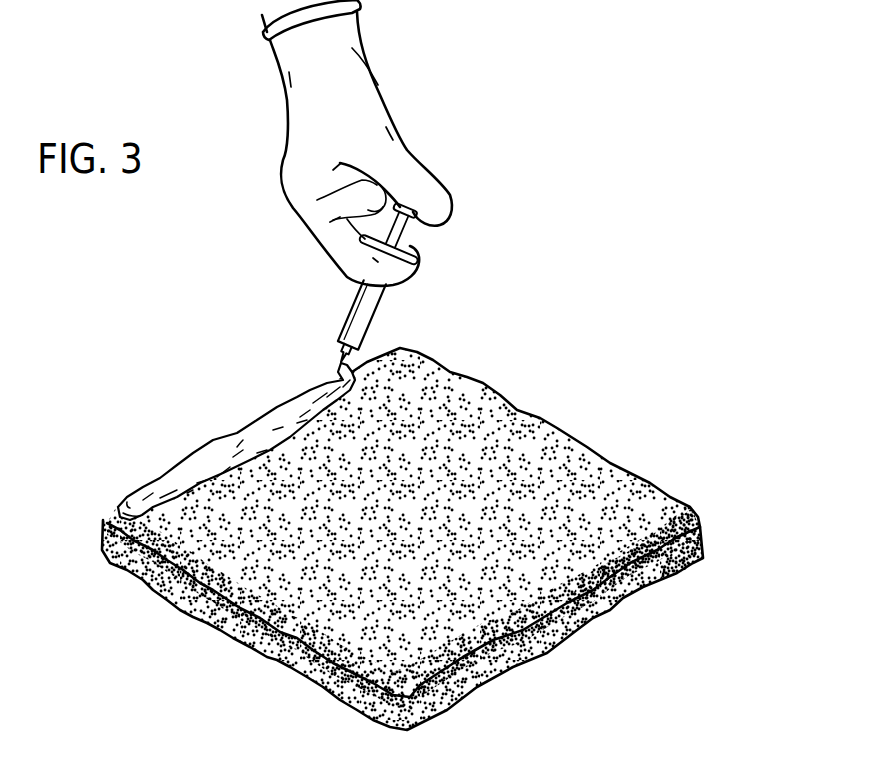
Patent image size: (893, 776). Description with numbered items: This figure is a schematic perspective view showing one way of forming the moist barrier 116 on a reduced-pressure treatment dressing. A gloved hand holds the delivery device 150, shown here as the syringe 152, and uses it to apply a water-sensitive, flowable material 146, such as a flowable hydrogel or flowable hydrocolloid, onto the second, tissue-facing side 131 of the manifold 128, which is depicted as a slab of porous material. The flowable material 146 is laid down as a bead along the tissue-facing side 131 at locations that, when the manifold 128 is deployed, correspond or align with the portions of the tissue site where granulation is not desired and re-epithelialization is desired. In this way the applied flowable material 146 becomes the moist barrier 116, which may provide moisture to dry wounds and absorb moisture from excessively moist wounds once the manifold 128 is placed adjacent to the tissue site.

The moist barrier 116 is at (253, 430).
The manifold 128 is at (702, 533).
The second, tissue-facing side 131 is at (573, 447).
The water-sensitive, flowable material 146 is at (157, 487).
The delivery device 150 is at (354, 302).
The syringe 152 is at (338, 337).